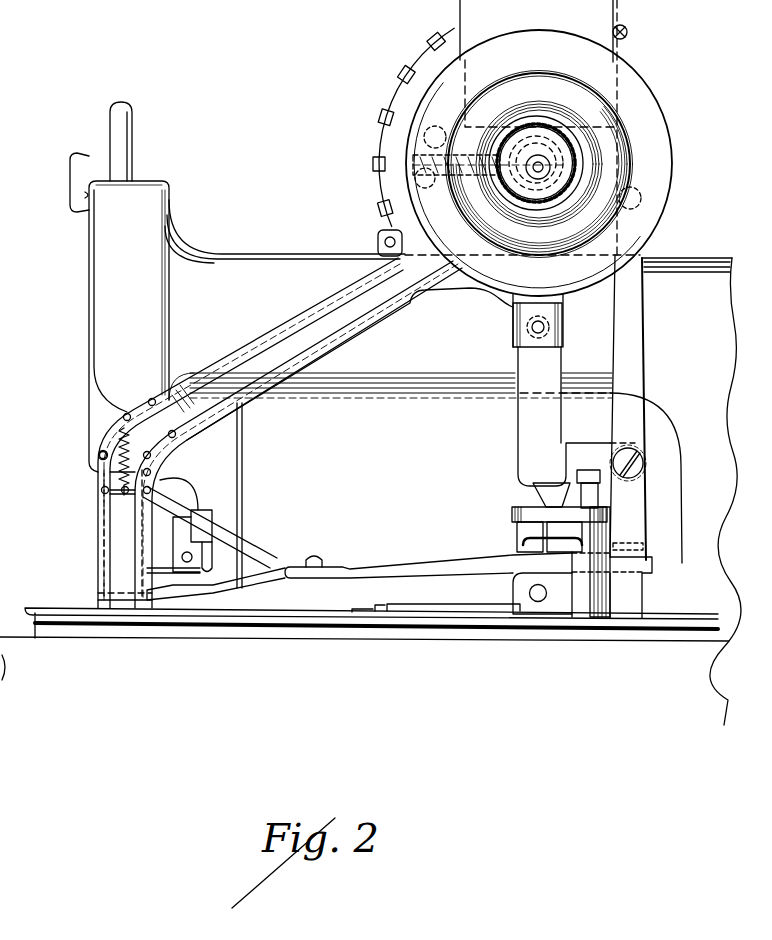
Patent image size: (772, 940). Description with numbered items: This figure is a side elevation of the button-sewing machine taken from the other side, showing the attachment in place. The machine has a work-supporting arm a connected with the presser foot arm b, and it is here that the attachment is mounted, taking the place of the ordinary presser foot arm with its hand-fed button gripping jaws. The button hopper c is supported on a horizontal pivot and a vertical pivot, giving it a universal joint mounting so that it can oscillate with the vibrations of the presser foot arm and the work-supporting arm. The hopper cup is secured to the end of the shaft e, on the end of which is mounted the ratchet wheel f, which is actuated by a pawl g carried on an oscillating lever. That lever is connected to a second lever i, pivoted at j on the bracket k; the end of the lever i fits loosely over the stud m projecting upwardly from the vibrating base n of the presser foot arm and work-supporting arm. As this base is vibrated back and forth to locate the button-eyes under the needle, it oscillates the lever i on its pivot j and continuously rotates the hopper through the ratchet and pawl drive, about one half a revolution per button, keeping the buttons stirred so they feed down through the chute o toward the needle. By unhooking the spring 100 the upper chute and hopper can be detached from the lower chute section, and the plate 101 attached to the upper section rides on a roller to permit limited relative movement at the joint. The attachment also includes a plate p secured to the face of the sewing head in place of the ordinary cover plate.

The work-supporting arm a is at (33, 608).
The presser foot arm b is at (395, 566).
The button hopper c is at (378, 132).
The shaft e is at (550, 167).
The ratchet wheel f is at (537, 125).
The pawl g is at (483, 153).
The second lever i is at (632, 343).
The pivot j is at (618, 475).
The bracket k is at (528, 432).
The stud m is at (633, 577).
The vibrating base n is at (632, 180).
The chute o is at (322, 332).
The plate p is at (88, 276).
The spring 100 is at (112, 440).
The plate 101 is at (99, 457).